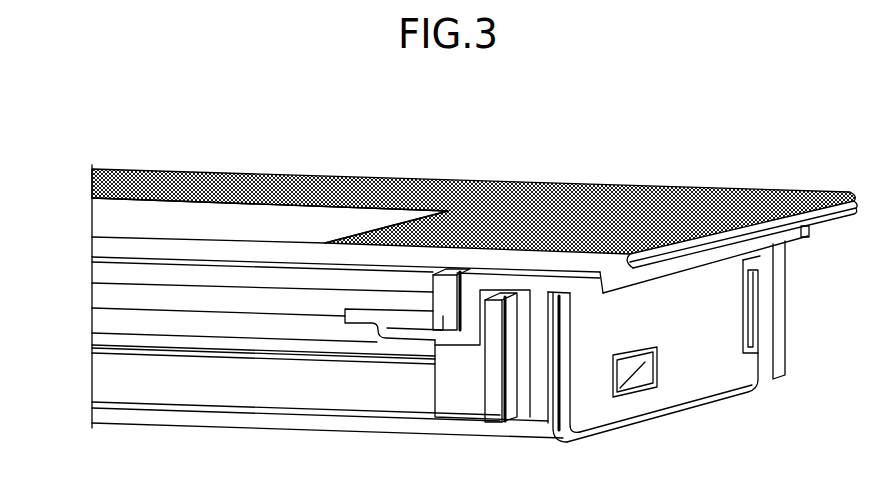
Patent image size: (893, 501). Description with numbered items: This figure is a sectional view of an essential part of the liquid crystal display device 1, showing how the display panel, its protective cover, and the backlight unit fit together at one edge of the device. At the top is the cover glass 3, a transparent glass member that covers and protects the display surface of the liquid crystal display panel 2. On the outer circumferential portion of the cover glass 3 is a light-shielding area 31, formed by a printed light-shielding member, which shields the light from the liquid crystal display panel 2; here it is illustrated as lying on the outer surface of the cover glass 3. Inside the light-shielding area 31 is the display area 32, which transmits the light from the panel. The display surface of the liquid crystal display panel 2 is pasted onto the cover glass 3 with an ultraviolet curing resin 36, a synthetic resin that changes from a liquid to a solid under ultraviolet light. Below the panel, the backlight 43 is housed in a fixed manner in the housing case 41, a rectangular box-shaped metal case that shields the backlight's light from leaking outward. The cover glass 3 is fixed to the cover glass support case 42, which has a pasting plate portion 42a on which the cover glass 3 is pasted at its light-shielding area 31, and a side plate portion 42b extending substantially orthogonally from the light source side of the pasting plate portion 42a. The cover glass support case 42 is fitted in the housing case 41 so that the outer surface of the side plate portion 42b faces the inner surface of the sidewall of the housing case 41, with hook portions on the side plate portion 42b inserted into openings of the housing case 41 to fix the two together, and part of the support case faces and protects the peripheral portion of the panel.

The liquid crystal display device 1 is at (766, 151).
The liquid crystal display panel 2 is at (88, 265).
The cover glass 3 is at (625, 207).
The light-shielding area 31 is at (529, 190).
The display area 32 is at (307, 219).
The ultraviolet curing resin 36 is at (92, 262).
The housing case 41 is at (698, 360).
The cover glass support case 42 is at (540, 300).
The pasting plate portion 42a is at (584, 284).
The side plate portion 42b is at (541, 405).
The backlight 43 is at (88, 333).